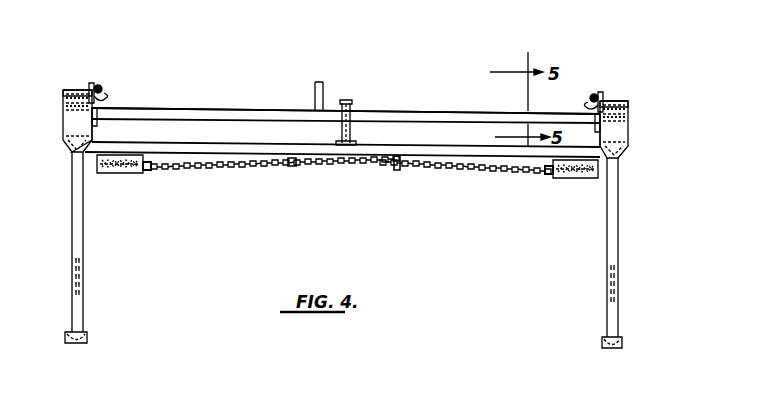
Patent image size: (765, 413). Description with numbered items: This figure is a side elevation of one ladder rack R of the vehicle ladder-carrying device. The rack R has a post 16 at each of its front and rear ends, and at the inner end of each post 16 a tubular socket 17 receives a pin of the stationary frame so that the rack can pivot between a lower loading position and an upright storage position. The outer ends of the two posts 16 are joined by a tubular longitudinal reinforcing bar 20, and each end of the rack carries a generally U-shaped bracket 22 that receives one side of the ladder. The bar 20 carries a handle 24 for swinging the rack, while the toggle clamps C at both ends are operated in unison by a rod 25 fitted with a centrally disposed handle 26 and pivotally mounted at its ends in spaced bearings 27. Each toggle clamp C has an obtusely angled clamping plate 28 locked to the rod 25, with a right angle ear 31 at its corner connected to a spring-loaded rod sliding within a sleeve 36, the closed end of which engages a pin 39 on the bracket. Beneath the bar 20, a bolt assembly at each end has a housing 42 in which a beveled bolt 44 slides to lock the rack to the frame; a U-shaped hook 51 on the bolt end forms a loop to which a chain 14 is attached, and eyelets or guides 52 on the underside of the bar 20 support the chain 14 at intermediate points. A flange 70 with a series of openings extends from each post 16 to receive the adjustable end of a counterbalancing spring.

The toggle clamp C is at (58, 94).
The rack R is at (85, 285).
The chain 14 is at (243, 168).
The post 16 is at (72, 171).
The tubular socket 17 is at (87, 337).
The longitudinal reinforcing bar 20 is at (415, 147).
The U-shaped bracket 22 is at (62, 129).
The handle 24 is at (352, 108).
The rod 25 is at (405, 112).
The handle 26 is at (316, 96).
The bearings 27 is at (96, 124).
The clamping plate 28 is at (66, 90).
The right angle ear 31 is at (90, 84).
The sleeve 36 is at (104, 100).
The pin 39 is at (102, 88).
The housing 42 is at (128, 173).
The bolt 44 is at (101, 173).
The U-shaped hook 51 is at (151, 170).
The eyelets or guides 52 is at (291, 166).
The flange 70 is at (76, 275).